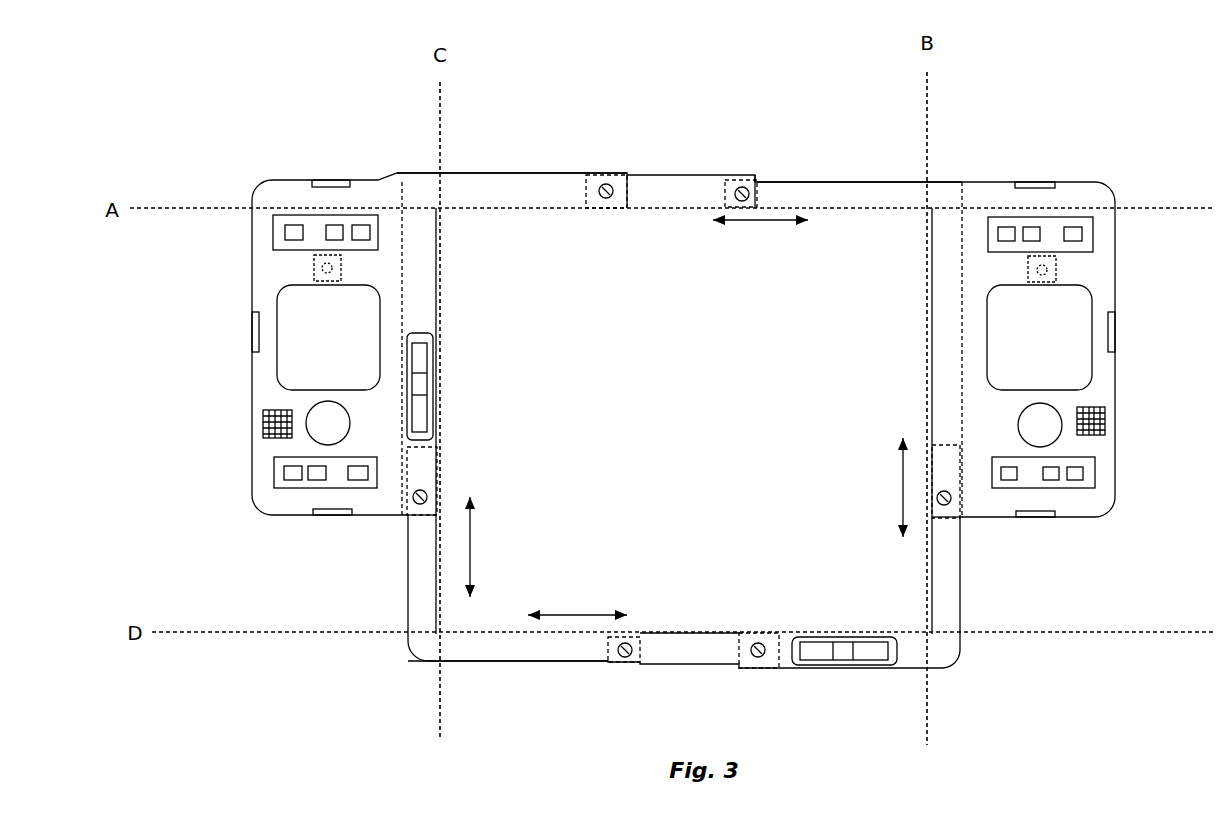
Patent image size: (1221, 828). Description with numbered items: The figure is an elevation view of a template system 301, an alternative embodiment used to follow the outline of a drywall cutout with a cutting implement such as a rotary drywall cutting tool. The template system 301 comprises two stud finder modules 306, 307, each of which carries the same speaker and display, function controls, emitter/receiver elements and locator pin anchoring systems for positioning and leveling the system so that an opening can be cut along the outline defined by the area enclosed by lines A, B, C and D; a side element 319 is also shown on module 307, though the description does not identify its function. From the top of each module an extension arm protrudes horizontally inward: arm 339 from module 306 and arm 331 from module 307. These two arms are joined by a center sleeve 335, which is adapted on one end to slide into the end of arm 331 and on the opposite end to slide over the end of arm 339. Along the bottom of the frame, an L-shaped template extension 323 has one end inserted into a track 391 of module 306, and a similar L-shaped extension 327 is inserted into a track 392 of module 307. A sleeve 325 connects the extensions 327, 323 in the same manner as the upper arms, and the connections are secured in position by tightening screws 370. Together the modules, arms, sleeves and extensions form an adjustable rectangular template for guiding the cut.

The template system 301 is at (641, 96).
The stud finder module 306 is at (1121, 192).
The stud finder module 307 is at (247, 188).
The side button 319 is at (252, 338).
The L-shaped template extension 323 is at (911, 681).
The sleeve 325 is at (665, 633).
The L-shaped extension 327 is at (556, 673).
The extension arm 331 is at (558, 172).
The center sleeve 335 is at (677, 175).
The extension arm 339 is at (795, 181).
The tightening screw 370 is at (606, 198).
The track 391 is at (969, 412).
The track 392 is at (413, 300).